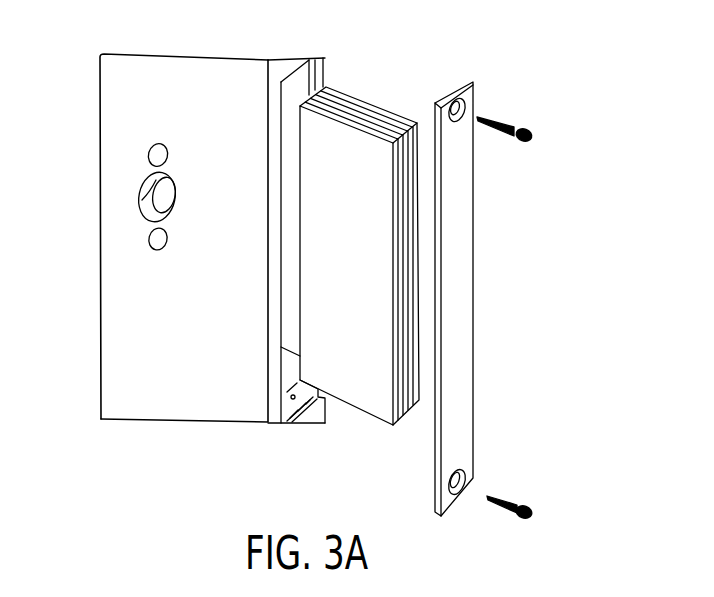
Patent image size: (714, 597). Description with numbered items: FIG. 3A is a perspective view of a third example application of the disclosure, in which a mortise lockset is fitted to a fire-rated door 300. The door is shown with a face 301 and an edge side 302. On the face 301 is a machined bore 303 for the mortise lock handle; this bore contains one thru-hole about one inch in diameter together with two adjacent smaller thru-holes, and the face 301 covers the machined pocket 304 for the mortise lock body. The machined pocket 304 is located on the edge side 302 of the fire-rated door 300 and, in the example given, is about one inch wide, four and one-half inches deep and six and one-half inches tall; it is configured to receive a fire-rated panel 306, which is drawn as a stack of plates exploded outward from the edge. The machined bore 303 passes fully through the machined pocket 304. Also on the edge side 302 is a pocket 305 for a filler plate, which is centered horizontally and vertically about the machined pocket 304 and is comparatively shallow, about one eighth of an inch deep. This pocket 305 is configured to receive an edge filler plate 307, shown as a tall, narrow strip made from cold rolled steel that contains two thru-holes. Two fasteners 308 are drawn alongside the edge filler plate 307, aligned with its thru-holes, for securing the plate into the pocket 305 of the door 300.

The fire-rated door 300 is at (307, 260).
The face 301 is at (160, 215).
The edge side 302 is at (293, 237).
The machined bore 303 is at (142, 200).
The machined pocket 304 is at (302, 83).
The pocket 305 is at (300, 367).
The fire-rated panel 306 is at (348, 390).
The edge filler plate 307 is at (462, 268).
The fasteners 308 is at (533, 122).